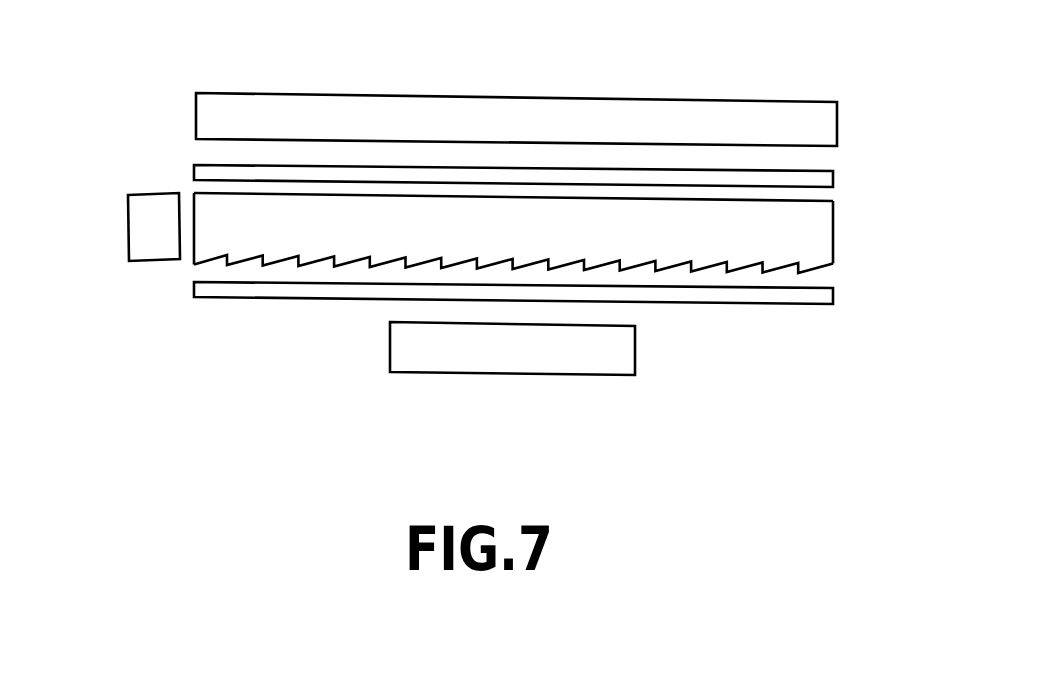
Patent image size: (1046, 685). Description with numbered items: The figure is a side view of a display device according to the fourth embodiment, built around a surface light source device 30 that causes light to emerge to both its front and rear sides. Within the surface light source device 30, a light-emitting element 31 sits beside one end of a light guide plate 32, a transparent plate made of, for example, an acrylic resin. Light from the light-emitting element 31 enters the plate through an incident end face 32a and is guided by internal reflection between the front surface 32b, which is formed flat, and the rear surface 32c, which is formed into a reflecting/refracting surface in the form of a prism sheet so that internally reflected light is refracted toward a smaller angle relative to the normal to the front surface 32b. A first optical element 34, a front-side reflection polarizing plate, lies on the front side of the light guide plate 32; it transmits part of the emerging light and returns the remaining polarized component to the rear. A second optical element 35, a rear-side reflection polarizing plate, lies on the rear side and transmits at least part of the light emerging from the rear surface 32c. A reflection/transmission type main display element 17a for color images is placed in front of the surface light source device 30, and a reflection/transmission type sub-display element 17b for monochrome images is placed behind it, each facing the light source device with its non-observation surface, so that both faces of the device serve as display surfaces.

The main display element 17a is at (731, 128).
The sub-display element 17b is at (522, 360).
The surface light source device 30 is at (501, 206).
The light-emitting element 31 is at (145, 225).
The light guide plate 32 is at (460, 232).
The incident end face 32a is at (190, 250).
The front surface 32b is at (243, 193).
The rear surface 32c is at (670, 270).
The first optical element 34 is at (356, 177).
The second optical element 35 is at (310, 288).